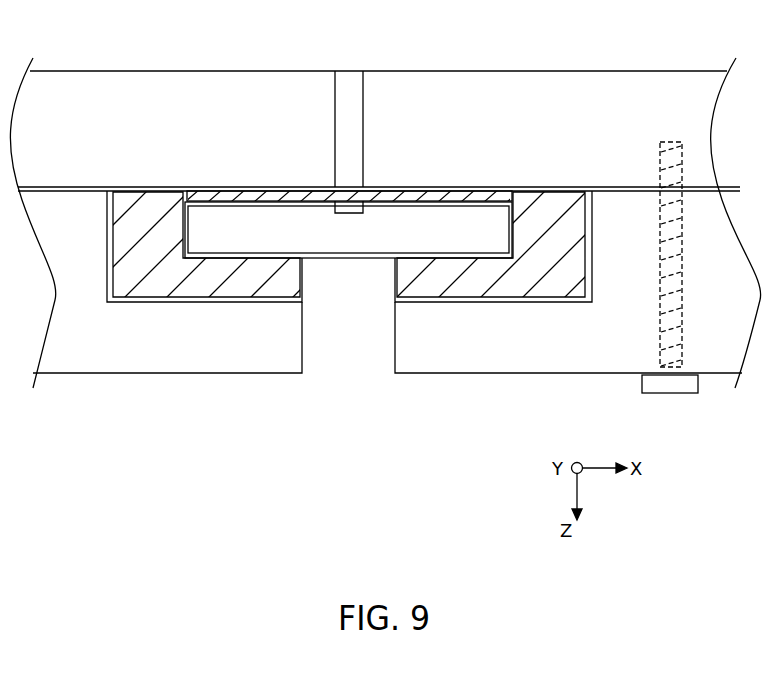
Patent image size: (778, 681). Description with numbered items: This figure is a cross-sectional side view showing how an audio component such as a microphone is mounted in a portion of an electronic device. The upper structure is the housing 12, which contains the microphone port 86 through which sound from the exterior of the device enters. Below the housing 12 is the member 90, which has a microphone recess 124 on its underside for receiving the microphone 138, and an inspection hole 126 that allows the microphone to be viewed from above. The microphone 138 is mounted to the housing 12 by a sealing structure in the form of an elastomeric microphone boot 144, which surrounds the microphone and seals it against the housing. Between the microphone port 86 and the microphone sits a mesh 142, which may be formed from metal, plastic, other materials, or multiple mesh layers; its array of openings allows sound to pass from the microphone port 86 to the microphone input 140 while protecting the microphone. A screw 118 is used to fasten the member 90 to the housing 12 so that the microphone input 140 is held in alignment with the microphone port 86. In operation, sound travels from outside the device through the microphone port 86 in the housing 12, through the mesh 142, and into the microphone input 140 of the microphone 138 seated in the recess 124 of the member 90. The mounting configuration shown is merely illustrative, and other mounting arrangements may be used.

The housing 12 is at (603, 80).
The microphone port 86 is at (349, 80).
The elastomeric microphone boot 144 is at (163, 197).
The mesh 142 is at (245, 195).
The microphone 138 is at (457, 217).
The microphone input 140 is at (347, 212).
The microphone recess 124 is at (200, 302).
The inspection hole 126 is at (357, 369).
The member 90 is at (530, 373).
The screw 118 is at (672, 387).